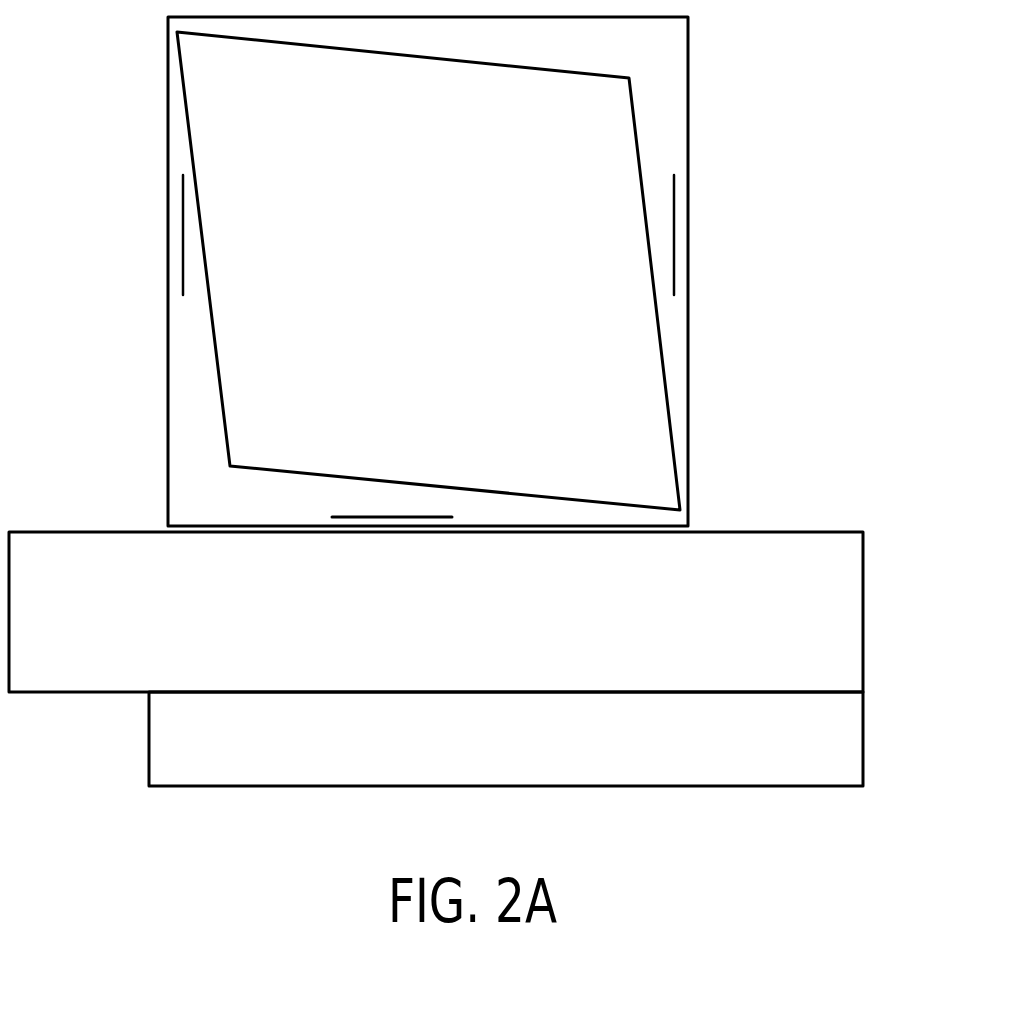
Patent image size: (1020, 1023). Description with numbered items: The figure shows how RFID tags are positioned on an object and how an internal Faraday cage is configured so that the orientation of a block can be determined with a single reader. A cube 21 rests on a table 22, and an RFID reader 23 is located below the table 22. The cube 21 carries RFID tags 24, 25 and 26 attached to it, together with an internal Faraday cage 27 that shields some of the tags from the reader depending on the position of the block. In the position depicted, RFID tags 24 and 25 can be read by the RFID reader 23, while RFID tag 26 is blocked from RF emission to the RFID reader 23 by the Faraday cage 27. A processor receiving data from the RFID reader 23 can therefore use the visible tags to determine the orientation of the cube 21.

The cube 21 is at (688, 43).
The table 22 is at (845, 617).
The RFID reader 23 is at (845, 740).
The RFID tag 24 is at (183, 235).
The RFID tag 25 is at (390, 517).
The RFID tag 26 is at (674, 235).
The internal Faraday cage 27 is at (635, 120).